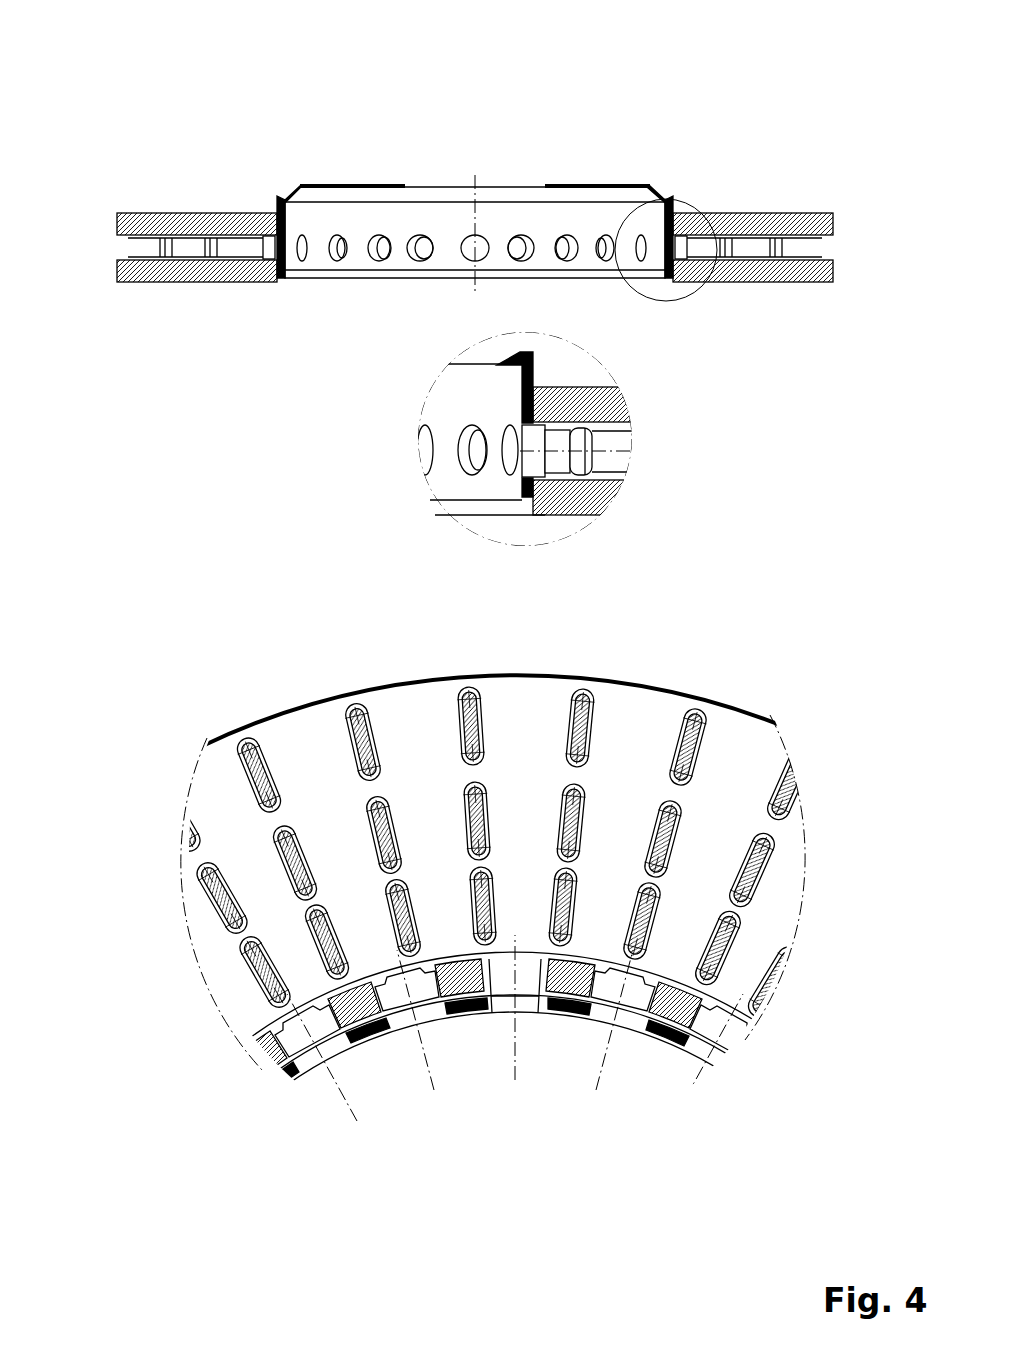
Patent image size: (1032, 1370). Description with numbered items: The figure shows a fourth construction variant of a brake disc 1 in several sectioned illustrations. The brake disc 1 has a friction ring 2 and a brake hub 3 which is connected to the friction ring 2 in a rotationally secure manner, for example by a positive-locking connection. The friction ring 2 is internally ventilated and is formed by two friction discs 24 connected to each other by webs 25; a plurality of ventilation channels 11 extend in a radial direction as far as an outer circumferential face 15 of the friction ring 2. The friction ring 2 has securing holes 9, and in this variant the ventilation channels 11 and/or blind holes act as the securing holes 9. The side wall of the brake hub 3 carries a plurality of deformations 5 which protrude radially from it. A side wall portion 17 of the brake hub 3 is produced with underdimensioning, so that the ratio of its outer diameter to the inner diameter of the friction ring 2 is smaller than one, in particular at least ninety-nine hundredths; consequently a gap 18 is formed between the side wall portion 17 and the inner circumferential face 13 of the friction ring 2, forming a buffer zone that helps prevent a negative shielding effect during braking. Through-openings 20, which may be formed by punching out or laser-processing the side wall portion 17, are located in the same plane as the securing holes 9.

The brake disc 1 is at (640, 45).
The friction ring 2 is at (815, 263).
The brake hub 3 is at (300, 188).
The deformation 5 is at (600, 478).
The securing hole 9 is at (425, 356).
The ventilation channel 11 is at (138, 246).
The inner circumferential face 13 is at (660, 1015).
The outer circumferential face 15 is at (755, 716).
The side wall portion 17 is at (545, 385).
The gap 18 is at (527, 505).
The through-opening 20 is at (470, 452).
The friction disc 24 is at (135, 226).
The web 25 is at (242, 776).